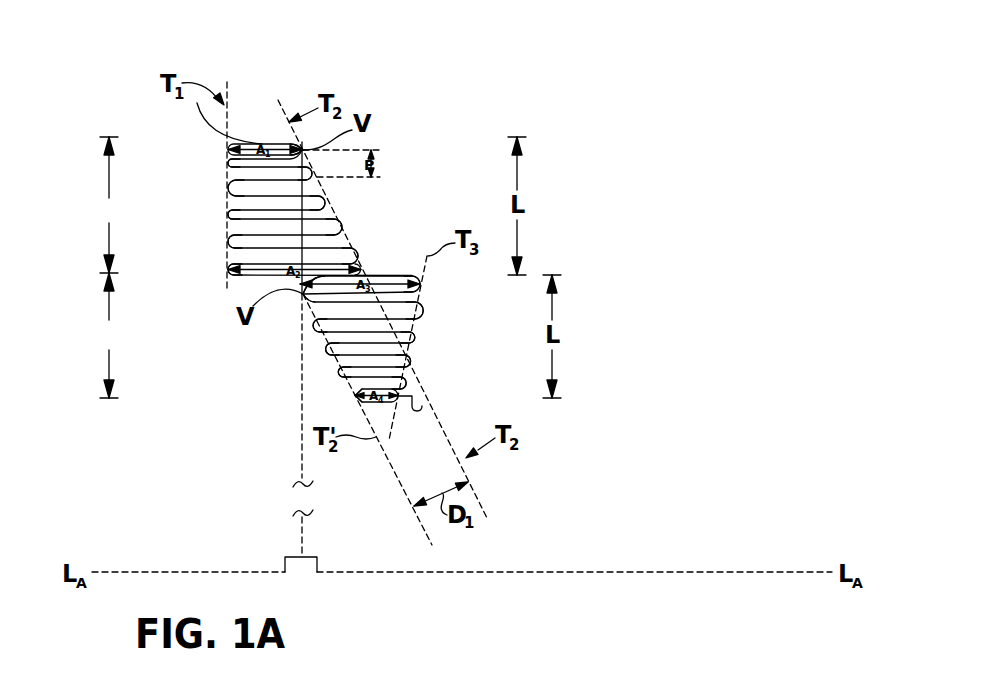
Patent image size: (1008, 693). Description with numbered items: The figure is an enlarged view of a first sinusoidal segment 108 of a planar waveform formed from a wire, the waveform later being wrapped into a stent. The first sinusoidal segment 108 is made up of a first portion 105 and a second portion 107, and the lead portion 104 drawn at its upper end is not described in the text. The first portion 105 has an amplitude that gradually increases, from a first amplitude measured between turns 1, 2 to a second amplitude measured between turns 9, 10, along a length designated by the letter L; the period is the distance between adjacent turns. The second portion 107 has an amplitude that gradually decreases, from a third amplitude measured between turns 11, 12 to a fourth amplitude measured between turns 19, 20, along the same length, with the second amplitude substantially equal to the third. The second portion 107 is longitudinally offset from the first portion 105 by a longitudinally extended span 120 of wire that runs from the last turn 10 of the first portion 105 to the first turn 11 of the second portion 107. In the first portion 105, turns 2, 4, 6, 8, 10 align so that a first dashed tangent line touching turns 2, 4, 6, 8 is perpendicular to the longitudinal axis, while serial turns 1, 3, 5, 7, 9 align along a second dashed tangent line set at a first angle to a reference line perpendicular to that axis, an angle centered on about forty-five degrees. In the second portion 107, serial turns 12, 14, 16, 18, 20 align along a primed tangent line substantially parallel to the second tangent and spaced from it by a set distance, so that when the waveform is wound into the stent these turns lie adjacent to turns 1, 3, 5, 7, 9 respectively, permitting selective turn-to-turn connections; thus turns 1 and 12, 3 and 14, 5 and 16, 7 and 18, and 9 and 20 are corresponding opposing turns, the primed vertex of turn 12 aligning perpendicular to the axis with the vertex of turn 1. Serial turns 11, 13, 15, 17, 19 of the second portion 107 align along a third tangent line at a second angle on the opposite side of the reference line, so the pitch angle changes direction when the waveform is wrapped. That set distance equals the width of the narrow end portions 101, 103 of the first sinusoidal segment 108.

The turn 1 is at (305, 150).
The turn 2 is at (228, 163).
The turn 3 is at (312, 173).
The turn 4 is at (228, 188).
The turn 5 is at (326, 203).
The turn 6 is at (228, 214).
The turn 7 is at (342, 227).
The turn 8 is at (228, 241).
The turn 9 is at (357, 256).
The turn 10 is at (228, 269).
The turn 11 is at (422, 285).
The turn 12 is at (303, 294).
The turn 13 is at (416, 311).
The turn 14 is at (320, 326).
The turn 15 is at (410, 338).
The turn 16 is at (332, 349).
The turn 17 is at (405, 361).
The turn 18 is at (344, 372).
The turn 19 is at (401, 383).
The turn 20 is at (355, 396).
The narrow end portion 101 is at (243, 143).
The narrow end portion 103 is at (385, 410).
The lead wire 104 is at (203, 123).
The first portion 105 is at (109, 205).
The second portion 107 is at (109, 335).
The first sinusoidal segment 108 is at (575, 207).
The longitudinally extended span 120 is at (392, 266).